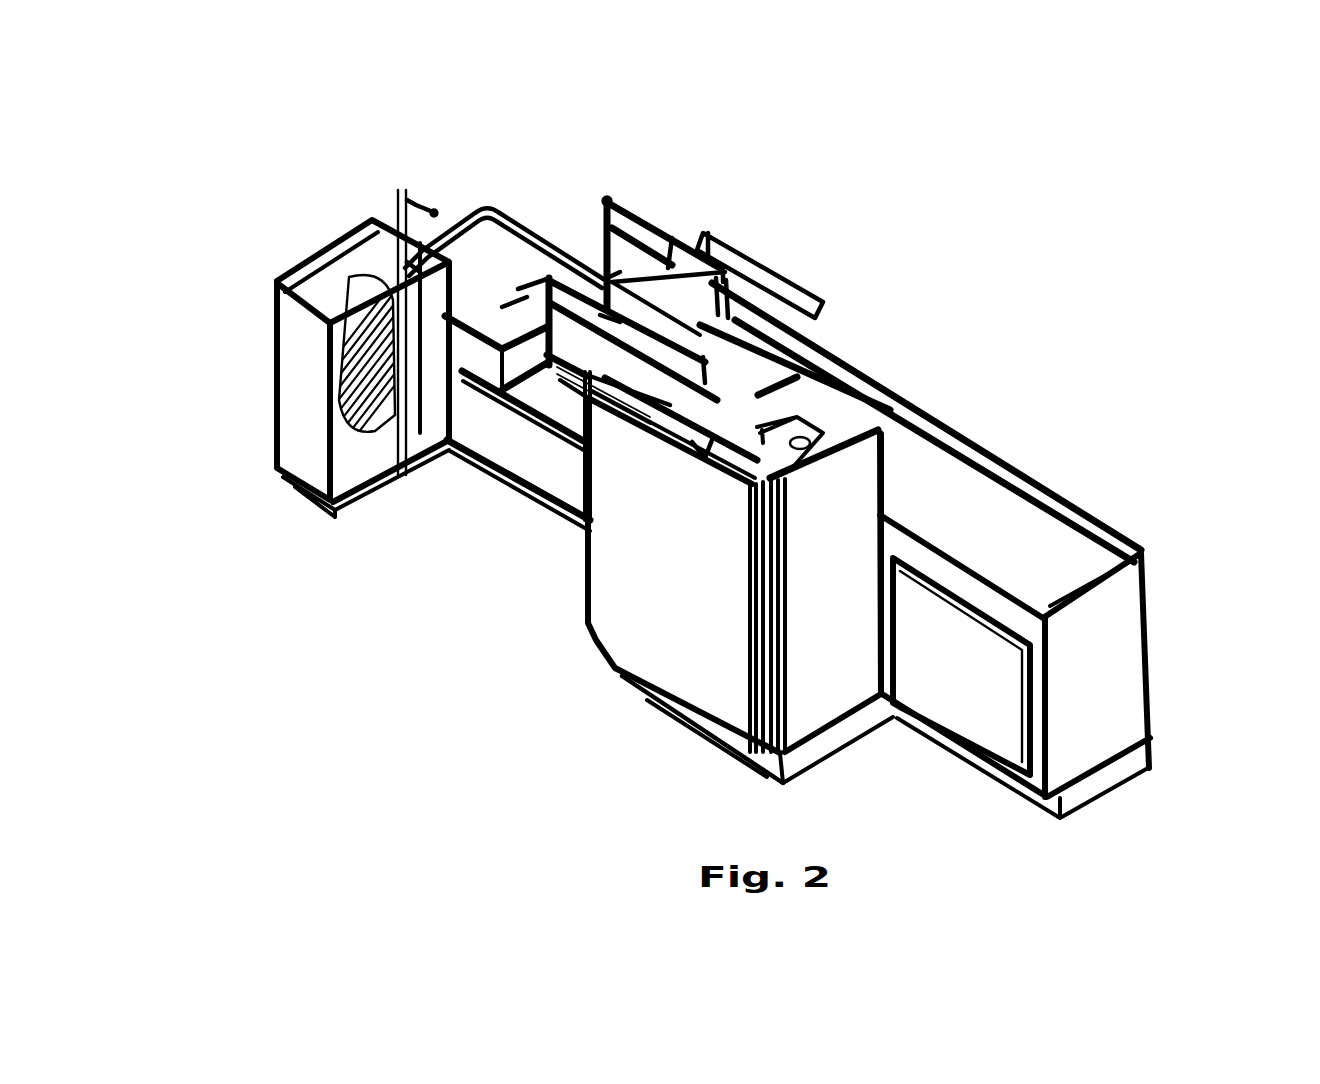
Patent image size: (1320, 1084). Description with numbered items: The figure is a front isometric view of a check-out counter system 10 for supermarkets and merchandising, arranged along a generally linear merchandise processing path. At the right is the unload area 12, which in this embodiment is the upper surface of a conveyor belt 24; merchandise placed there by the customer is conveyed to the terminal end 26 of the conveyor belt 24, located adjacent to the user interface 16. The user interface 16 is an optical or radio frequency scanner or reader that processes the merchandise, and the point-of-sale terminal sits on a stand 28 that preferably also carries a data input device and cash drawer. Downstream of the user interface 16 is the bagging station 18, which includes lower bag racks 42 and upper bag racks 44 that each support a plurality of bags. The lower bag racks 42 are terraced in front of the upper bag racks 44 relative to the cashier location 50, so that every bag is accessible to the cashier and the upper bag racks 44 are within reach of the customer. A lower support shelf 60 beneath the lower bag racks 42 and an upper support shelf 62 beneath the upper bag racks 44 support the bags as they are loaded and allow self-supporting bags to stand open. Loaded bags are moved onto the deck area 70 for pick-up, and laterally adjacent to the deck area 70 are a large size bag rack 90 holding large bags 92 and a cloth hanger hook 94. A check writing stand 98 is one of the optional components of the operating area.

The check-out counter system 10 is at (1157, 318).
The unload area 12 is at (1066, 578).
The user interface 16 is at (770, 362).
The bagging station 18 is at (657, 311).
The conveyor belt 24 is at (1007, 533).
The terminal end 26 is at (760, 393).
The stand 28 is at (740, 452).
The lower bag racks 42 is at (527, 300).
The upper bag racks 44 is at (715, 245).
The cashier location 50 is at (552, 583).
The lower support shelf 60 is at (590, 405).
The upper support shelf 62 is at (604, 284).
The deck area 70 is at (482, 272).
The large size bag rack 90 is at (275, 292).
The large bags 92 is at (365, 375).
The cloth hanger hook 94 is at (400, 213).
The check writing stand 98 is at (775, 290).